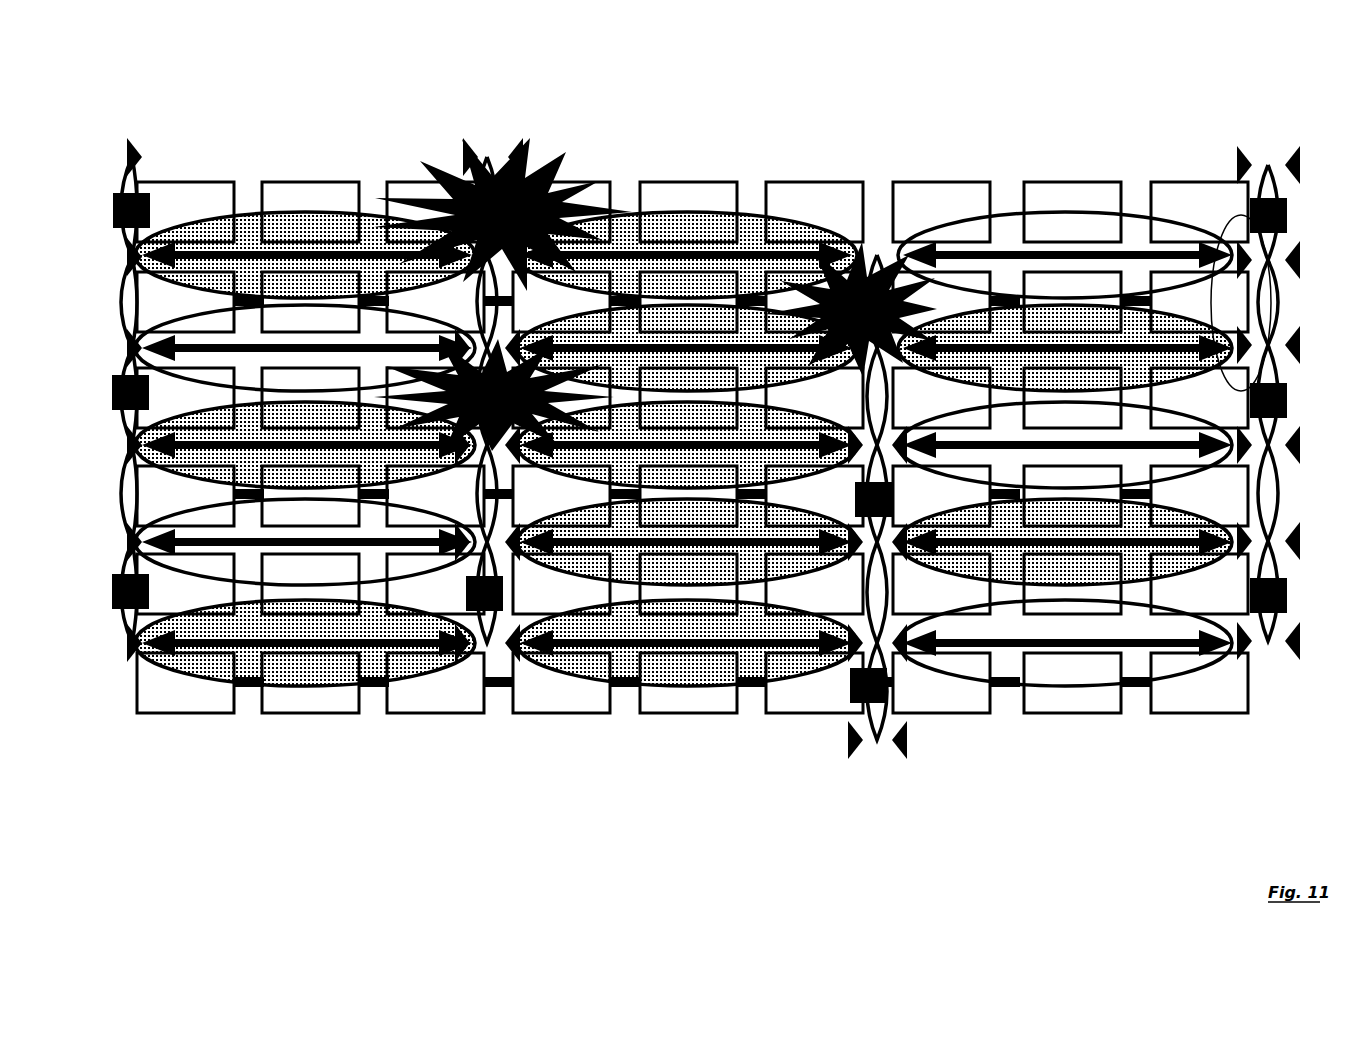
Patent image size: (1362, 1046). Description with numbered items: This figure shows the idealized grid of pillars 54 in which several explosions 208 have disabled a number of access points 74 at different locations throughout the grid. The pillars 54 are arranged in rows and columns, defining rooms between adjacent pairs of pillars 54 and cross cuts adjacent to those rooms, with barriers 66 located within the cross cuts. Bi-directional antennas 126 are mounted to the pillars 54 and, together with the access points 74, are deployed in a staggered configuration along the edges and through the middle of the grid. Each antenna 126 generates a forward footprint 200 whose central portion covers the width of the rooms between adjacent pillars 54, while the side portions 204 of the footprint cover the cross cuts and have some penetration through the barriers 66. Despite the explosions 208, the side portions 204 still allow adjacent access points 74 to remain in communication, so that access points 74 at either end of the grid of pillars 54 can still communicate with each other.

The pillar 54 is at (433, 695).
The barrier 66 is at (490, 688).
The access point 74 is at (1299, 595).
The antenna 126 is at (922, 740).
The forward footprint 200 is at (1085, 704).
The side portion of forward footprint 204 is at (1248, 208).
The explosion 208 is at (916, 240).